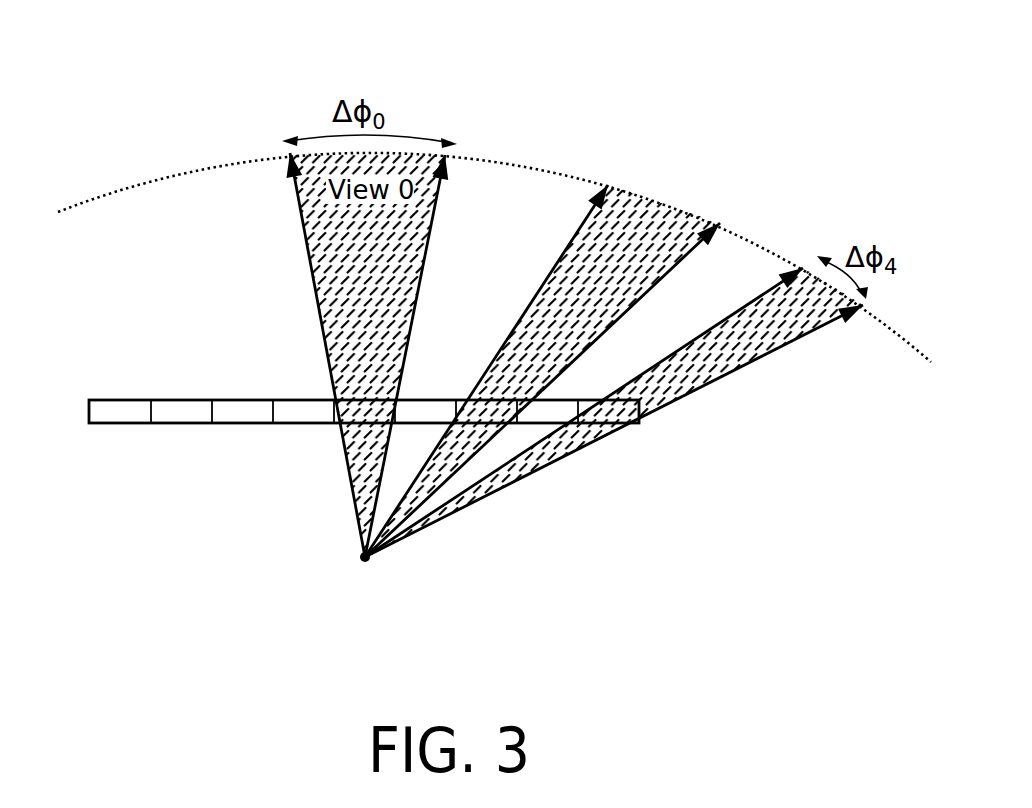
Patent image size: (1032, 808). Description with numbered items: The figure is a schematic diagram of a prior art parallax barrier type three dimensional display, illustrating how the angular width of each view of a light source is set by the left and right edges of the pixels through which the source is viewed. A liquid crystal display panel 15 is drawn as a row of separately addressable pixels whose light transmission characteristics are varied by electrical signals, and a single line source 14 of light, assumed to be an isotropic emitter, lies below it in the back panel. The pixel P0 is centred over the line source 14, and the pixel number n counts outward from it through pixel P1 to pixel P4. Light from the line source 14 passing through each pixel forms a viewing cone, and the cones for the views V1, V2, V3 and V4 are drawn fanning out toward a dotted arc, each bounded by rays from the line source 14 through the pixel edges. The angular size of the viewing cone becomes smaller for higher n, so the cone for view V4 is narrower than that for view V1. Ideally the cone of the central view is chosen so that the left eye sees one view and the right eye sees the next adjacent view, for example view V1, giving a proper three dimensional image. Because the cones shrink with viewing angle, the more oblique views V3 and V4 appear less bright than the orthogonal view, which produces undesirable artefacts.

The line source 14 is at (352, 559).
The liquid crystal display panel 15 is at (88, 409).
The pixel P0 is at (340, 412).
The pixel P1 is at (419, 406).
The pixel P4 is at (616, 414).
The view V1 is at (520, 193).
The view V2 is at (660, 221).
The view V3 is at (740, 266).
The view V4 is at (810, 303).